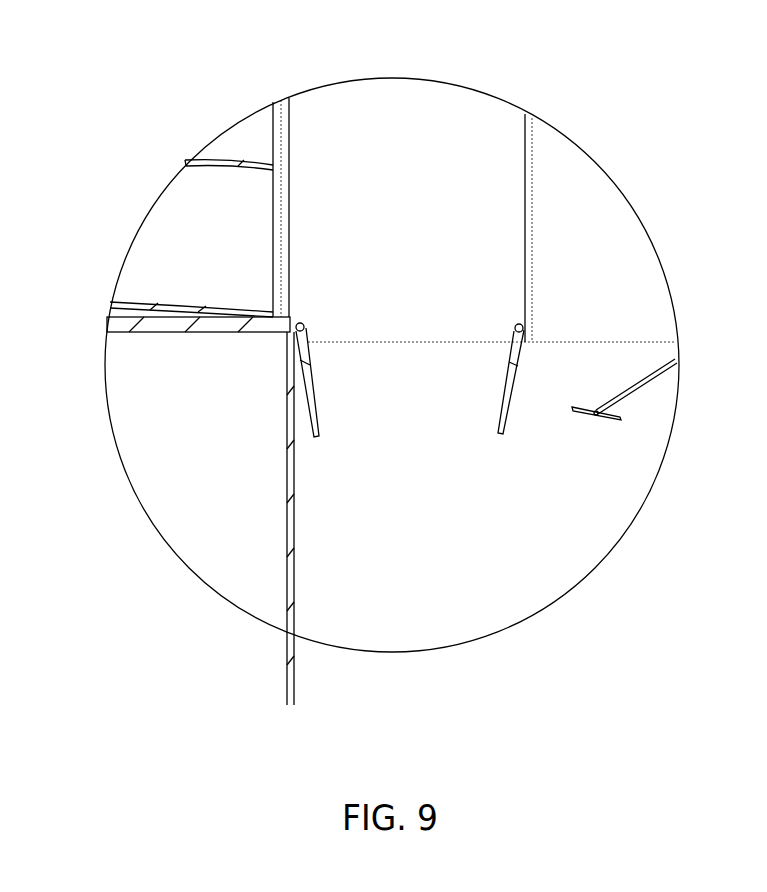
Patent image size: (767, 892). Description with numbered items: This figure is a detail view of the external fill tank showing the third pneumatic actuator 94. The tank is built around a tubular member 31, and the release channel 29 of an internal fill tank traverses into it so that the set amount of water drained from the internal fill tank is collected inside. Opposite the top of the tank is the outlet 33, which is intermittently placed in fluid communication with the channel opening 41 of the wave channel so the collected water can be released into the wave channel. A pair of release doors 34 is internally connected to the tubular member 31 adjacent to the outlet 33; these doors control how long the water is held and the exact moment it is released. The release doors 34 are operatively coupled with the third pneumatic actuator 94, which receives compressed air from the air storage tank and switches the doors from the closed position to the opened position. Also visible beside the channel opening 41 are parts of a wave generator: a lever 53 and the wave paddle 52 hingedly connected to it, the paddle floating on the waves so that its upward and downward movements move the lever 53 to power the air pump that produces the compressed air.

The release channel 29 is at (163, 240).
The tubular member 31 is at (527, 138).
The outlet 33 is at (363, 361).
The pair of release doors 34 is at (315, 423).
The channel opening 41 is at (334, 493).
The wave paddle 52 is at (577, 413).
The lever 53 is at (657, 378).
The third pneumatic actuator 94 is at (301, 325).